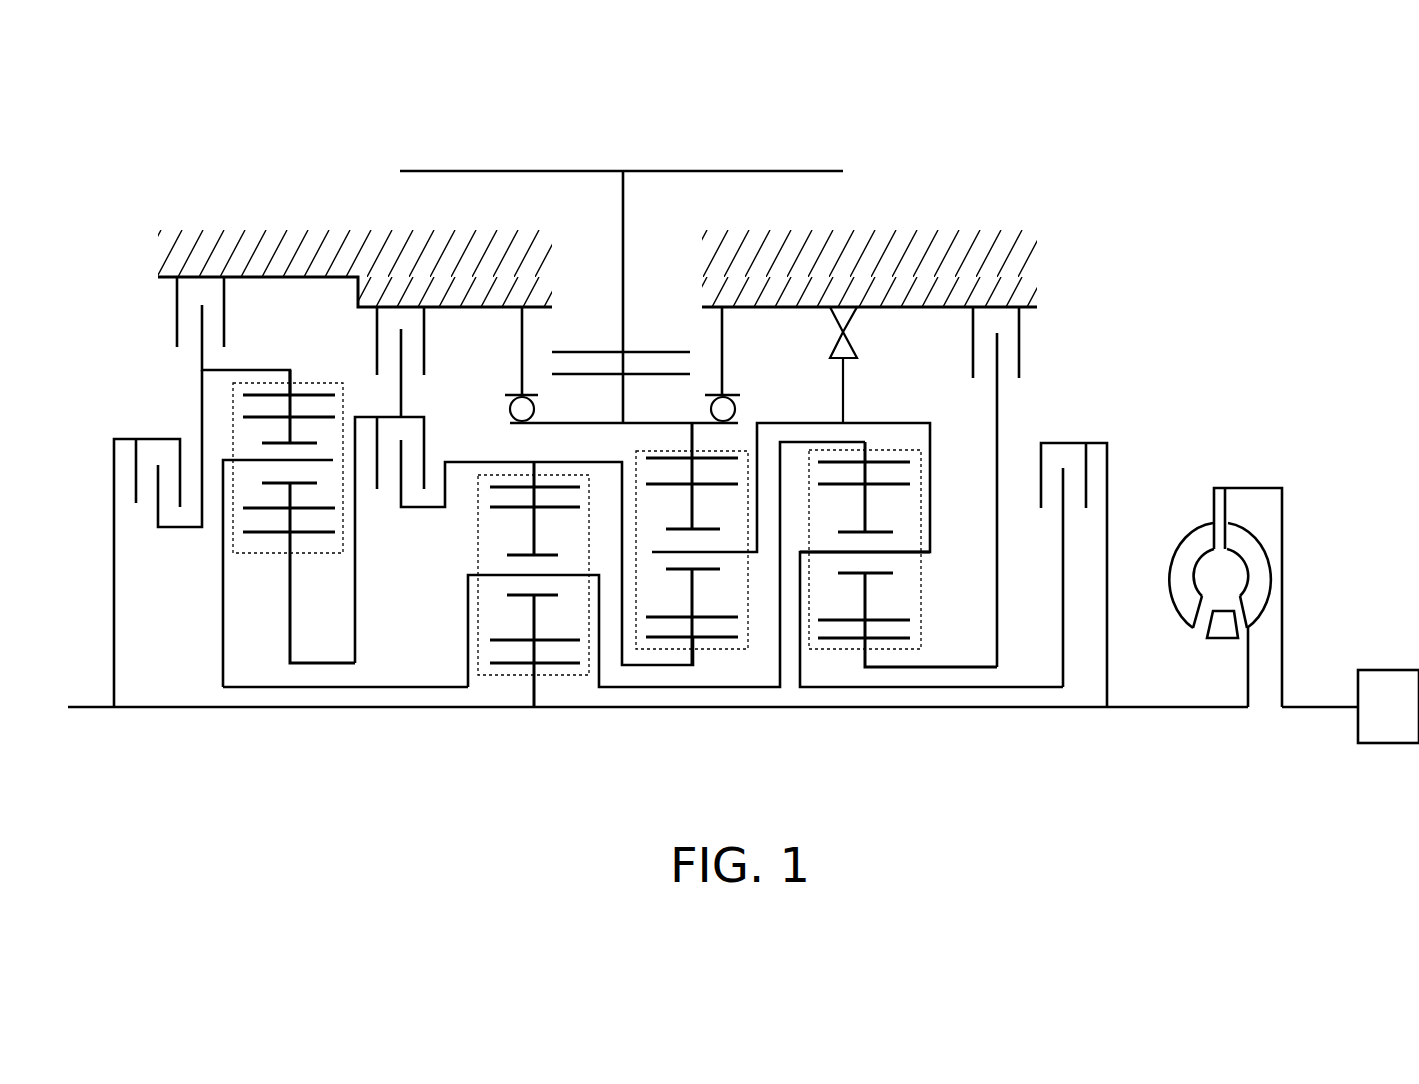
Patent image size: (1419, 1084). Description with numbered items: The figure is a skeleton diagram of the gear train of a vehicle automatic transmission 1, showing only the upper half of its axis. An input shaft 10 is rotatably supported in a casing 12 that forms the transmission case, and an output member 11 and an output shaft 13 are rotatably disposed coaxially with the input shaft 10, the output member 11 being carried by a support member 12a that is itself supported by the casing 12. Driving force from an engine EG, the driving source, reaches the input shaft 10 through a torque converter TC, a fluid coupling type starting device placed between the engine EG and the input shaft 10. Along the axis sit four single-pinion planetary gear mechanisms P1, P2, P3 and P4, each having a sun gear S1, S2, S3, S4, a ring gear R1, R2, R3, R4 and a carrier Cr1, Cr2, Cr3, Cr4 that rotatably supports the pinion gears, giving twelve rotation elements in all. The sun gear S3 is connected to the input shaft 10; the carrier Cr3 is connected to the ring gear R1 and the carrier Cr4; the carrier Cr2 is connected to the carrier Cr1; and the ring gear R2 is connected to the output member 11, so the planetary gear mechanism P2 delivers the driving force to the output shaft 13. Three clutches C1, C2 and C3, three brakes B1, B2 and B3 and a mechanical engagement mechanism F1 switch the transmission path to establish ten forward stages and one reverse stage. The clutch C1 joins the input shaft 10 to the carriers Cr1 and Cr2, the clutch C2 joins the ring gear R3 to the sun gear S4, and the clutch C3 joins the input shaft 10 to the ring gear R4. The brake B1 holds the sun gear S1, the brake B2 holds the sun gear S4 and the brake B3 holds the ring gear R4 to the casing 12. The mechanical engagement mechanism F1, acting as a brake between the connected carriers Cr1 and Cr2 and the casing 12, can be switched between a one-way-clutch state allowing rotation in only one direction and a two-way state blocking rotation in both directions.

The automatic transmission 1 is at (1105, 215).
The input shaft 10 is at (1000, 710).
The output member 11 is at (626, 396).
The casing 12 is at (462, 229).
The support member 12a is at (522, 340).
The output shaft 13 is at (590, 171).
The brake B1 is at (1040, 340).
The brake B2 is at (370, 325).
The brake B3 is at (162, 310).
The clutch C1 is at (1105, 433).
The clutch C2 is at (438, 457).
The clutch C3 is at (150, 548).
The mechanical engagement mechanism F1 is at (856, 340).
The ring gear R1 is at (910, 463).
The ring gear R2 is at (733, 458).
The ring gear R3 is at (490, 487).
The ring gear R4 is at (310, 395).
The carrier Cr1 is at (885, 552).
The carrier Cr2 is at (727, 552).
The carrier Cr3 is at (490, 575).
The carrier Cr4 is at (325, 460).
The planetary gear mechanism P1 is at (921, 610).
The planetary gear mechanism P2 is at (740, 650).
The planetary gear mechanism P3 is at (498, 675).
The planetary gear mechanism P4 is at (262, 553).
The sun gear S1 is at (893, 640).
The sun gear S2 is at (715, 640).
The sun gear S3 is at (567, 663).
The sun gear S4 is at (318, 532).
The torque converter TC is at (1192, 525).
The engine EG is at (1350, 706).